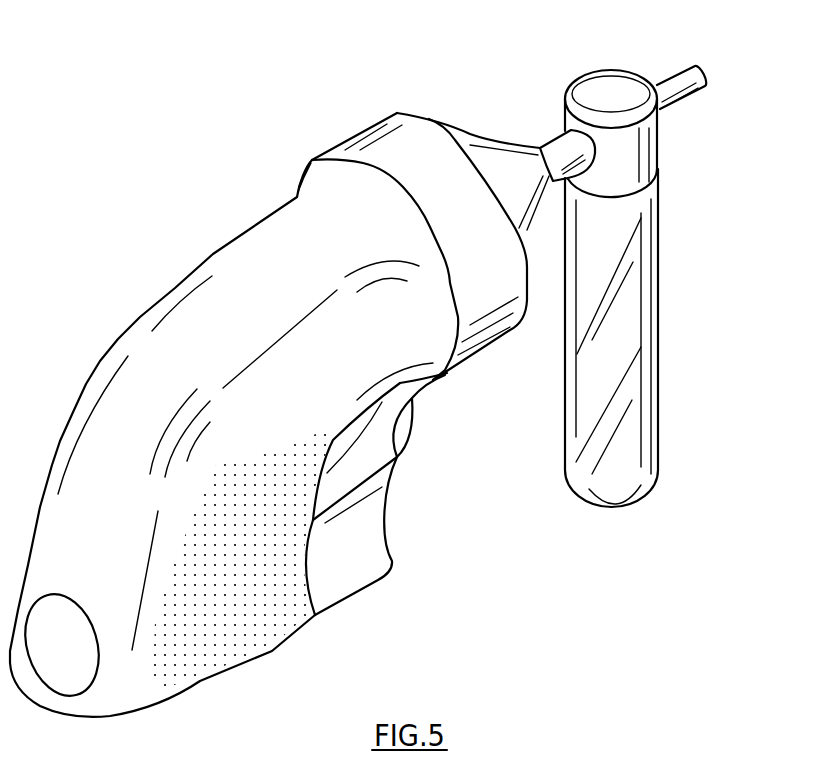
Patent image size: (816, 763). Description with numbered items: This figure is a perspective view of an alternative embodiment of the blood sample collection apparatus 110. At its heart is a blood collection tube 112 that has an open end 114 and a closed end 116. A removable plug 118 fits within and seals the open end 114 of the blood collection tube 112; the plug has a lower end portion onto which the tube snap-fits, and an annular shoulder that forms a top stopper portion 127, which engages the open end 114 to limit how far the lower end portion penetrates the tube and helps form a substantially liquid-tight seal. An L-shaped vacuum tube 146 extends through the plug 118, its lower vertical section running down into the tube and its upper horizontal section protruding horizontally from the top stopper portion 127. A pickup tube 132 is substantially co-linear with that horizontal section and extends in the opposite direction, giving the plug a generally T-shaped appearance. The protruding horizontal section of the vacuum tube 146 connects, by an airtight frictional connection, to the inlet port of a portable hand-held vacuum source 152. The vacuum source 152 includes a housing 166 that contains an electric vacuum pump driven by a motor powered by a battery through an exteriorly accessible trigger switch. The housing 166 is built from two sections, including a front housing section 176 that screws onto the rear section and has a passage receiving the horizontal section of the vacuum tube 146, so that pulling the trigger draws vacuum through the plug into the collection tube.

The blood sample collection apparatus 110 is at (386, 385).
The blood collection tube 112 is at (617, 354).
The open end 114 is at (637, 195).
The closed end 116 is at (613, 509).
The removable plug 118 is at (646, 140).
The top stopper portion 127 is at (651, 163).
The pickup tube 132 is at (677, 87).
The L-shaped vacuum tube 146 is at (563, 149).
The hand-held vacuum source 152 is at (240, 220).
The housing 166 is at (175, 342).
The front housing section 176 is at (429, 148).